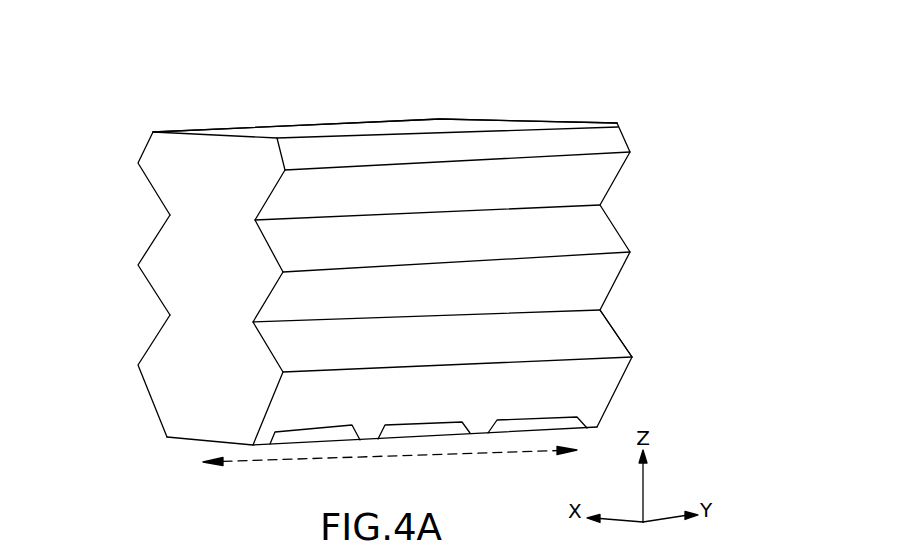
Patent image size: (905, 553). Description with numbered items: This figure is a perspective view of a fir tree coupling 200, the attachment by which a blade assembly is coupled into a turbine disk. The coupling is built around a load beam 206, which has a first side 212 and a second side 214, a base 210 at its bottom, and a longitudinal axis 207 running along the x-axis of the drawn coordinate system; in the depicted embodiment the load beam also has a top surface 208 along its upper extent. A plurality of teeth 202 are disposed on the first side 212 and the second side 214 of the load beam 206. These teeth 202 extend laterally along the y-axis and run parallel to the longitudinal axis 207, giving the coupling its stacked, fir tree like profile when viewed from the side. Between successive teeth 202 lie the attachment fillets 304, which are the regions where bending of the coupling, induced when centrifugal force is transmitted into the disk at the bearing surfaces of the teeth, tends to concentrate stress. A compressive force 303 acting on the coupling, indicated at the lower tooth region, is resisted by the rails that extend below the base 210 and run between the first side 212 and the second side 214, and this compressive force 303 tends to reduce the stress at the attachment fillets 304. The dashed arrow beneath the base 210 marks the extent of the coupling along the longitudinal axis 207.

The fir tree coupling 200 is at (527, 84).
The teeth 202 is at (623, 150).
The load beam 206 is at (167, 283).
The longitudinal axis 207 is at (327, 455).
The top surface 208 is at (578, 120).
The base 210 is at (167, 402).
The first side 212 is at (155, 183).
The second side 214 is at (272, 157).
The compressive force 303 is at (603, 337).
The attachment fillets 304 is at (602, 312).